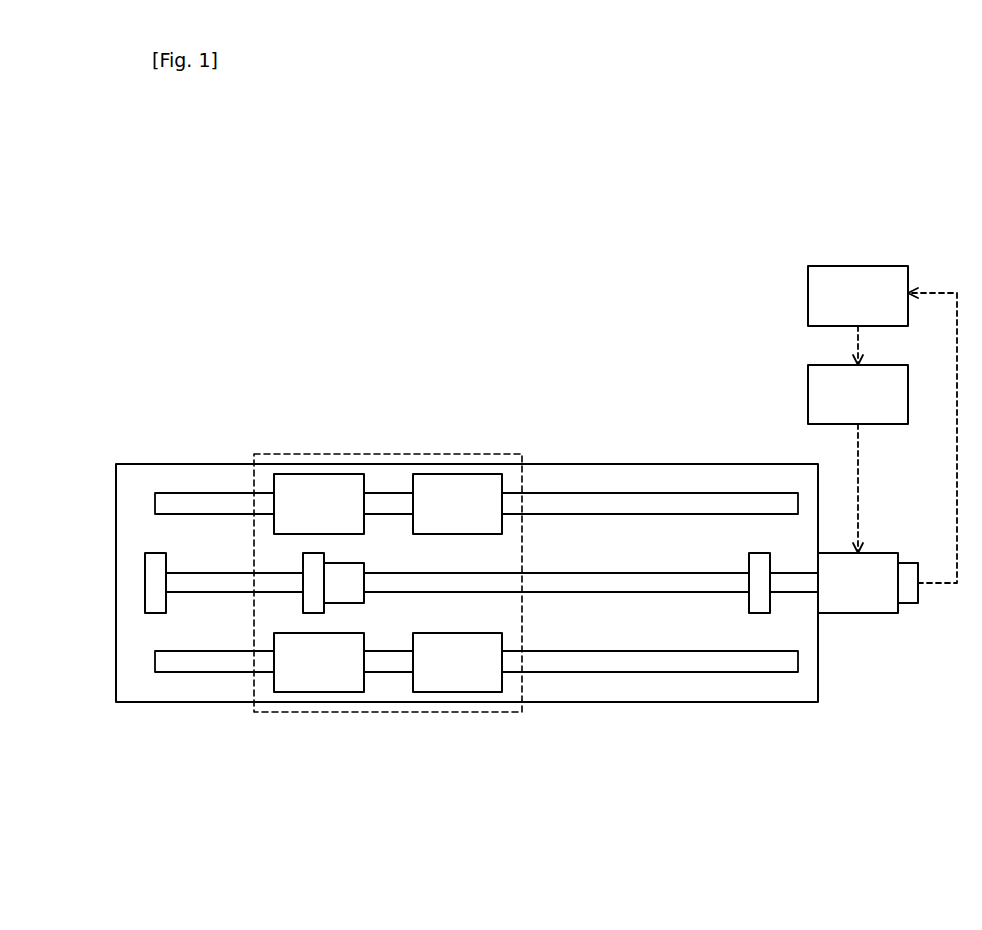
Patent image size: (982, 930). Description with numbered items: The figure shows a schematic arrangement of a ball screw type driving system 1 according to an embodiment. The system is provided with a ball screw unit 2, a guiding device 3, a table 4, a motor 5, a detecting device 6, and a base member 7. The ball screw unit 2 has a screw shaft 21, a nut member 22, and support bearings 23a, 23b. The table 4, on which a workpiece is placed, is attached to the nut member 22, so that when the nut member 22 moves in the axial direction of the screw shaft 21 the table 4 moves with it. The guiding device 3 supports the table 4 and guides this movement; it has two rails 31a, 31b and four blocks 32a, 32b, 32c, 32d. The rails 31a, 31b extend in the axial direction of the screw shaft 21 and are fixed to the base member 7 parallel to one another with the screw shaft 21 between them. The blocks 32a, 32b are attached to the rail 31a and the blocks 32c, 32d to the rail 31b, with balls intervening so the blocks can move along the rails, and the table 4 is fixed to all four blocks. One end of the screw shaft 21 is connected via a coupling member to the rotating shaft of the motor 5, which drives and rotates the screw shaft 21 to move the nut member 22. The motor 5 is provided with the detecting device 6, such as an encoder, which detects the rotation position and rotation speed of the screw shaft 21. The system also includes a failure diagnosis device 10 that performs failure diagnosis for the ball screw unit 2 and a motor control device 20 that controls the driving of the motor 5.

The ball screw type driving system 1 is at (183, 337).
The ball screw unit 2 is at (132, 541).
The guiding device 3 is at (659, 482).
The table 4 is at (490, 454).
The motor 5 is at (878, 613).
The detecting device 6 is at (908, 563).
The base member 7 is at (783, 702).
The failure diagnosis device 10 is at (808, 295).
The motor control device 20 is at (808, 395).
The screw shaft 21 is at (668, 593).
The nut member 22 is at (300, 597).
The support bearing 23a is at (145, 592).
The support bearing 23b is at (770, 603).
The rail 31a is at (607, 493).
The rail 31b is at (612, 672).
The block 32a is at (313, 474).
The block 32b is at (452, 474).
The block 32c is at (316, 692).
The block 32d is at (453, 692).